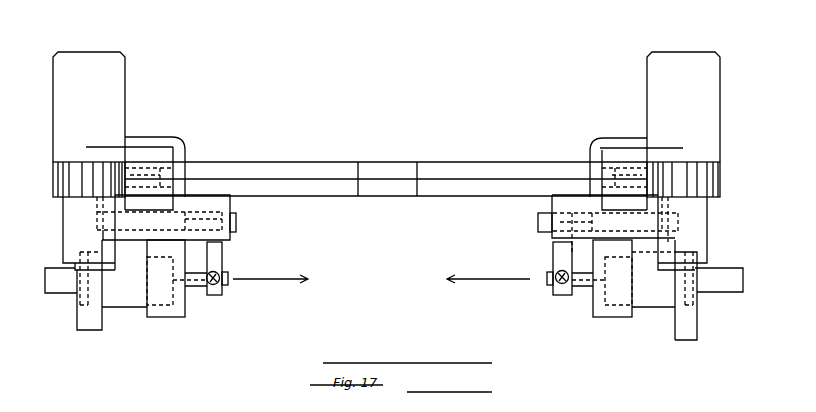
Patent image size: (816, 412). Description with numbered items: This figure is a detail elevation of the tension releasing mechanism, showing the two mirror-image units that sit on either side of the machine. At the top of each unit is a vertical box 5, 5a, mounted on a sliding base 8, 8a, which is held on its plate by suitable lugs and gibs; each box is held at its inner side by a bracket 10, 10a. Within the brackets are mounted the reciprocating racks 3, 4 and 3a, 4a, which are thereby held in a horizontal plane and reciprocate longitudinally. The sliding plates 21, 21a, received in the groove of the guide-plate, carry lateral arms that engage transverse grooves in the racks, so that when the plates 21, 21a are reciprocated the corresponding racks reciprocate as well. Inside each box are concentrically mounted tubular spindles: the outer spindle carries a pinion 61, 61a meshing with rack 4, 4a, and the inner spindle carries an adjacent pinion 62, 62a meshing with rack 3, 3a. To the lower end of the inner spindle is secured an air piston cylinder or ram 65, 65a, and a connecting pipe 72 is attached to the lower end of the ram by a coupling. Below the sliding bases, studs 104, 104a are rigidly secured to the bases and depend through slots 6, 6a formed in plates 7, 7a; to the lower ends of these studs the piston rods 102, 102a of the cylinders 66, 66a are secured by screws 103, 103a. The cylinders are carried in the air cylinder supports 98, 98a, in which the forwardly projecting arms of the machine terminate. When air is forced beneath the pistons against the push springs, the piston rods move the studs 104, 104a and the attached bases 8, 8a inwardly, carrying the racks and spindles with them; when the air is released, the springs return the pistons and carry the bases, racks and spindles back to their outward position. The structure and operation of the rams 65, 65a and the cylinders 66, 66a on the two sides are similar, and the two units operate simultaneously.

The reciprocating rack 3 is at (643, 183).
The reciprocating rack 3a is at (156, 190).
The reciprocating rack 4 is at (622, 167).
The reciprocating rack 4a is at (145, 167).
The vertical box 5 is at (657, 102).
The vertical box 5a is at (107, 108).
The slot 6 is at (592, 220).
The slot 6a is at (190, 220).
The plate 7 is at (538, 217).
The plate 7a is at (237, 223).
The sliding base 8 is at (595, 210).
The sliding base 8a is at (192, 227).
The bracket 10 is at (596, 145).
The bracket 10a is at (137, 143).
The sliding plate 21 is at (308, 170).
The sliding plate 21a is at (443, 182).
The pinion 61 is at (690, 172).
The pinion 61a is at (56, 172).
The pinion 62 is at (697, 190).
The pinion 62a is at (56, 187).
The air piston cylinder or ram 65 is at (693, 236).
The air piston cylinder or ram 65a is at (63, 222).
The cylinder 66 is at (650, 298).
The cylinder 66a is at (128, 292).
The connecting pipe 72 is at (687, 320).
The air cylinder support 98 is at (608, 313).
The air cylinder support 98a is at (167, 317).
The piston rod 102 is at (555, 283).
The piston rod 102a is at (228, 280).
The screw 103 is at (553, 285).
The screw 103a is at (229, 284).
The stud 104 is at (557, 297).
The stud 104a is at (216, 296).